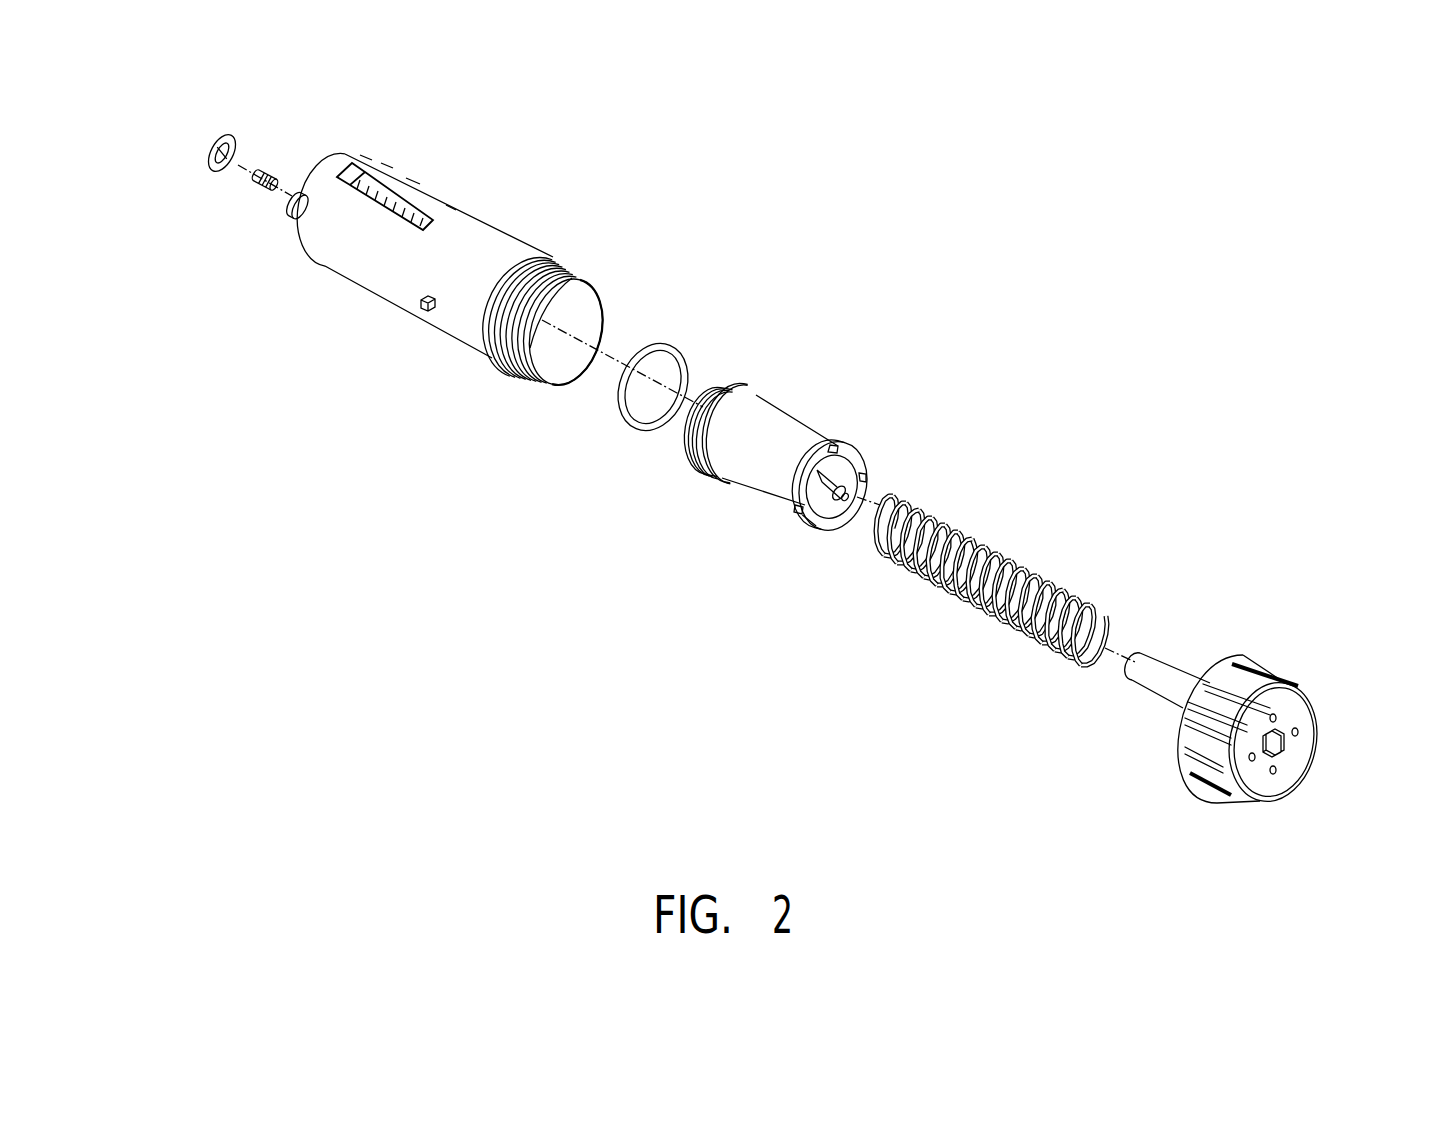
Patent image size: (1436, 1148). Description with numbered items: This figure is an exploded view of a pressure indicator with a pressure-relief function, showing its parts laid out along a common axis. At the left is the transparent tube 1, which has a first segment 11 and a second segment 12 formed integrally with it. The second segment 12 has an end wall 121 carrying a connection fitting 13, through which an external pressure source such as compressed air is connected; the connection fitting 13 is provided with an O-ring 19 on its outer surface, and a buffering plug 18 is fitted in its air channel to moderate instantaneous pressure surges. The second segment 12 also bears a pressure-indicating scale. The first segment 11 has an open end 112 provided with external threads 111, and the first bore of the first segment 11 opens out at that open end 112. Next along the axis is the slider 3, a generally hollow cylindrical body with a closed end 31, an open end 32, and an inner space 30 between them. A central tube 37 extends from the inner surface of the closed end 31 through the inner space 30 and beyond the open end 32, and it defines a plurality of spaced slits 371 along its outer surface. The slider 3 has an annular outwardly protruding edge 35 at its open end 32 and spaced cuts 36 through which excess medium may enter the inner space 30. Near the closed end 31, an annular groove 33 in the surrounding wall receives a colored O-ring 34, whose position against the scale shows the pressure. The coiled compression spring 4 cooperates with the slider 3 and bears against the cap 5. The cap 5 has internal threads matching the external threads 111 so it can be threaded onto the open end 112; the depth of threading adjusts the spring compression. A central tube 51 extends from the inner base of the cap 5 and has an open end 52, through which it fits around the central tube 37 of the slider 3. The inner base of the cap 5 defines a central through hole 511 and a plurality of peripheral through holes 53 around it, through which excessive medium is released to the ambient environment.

The transparent tube 1 is at (488, 237).
The first segment 11 is at (528, 257).
The external threads 111 is at (502, 360).
The open end 112 is at (552, 373).
The second segment 12 is at (317, 193).
The end wall 121 is at (343, 153).
The connection fitting 13 is at (288, 207).
The buffering plug 18 is at (256, 188).
The O-ring 19 is at (207, 165).
The slider 3 is at (793, 428).
The inner space 30 is at (831, 486).
The closed end 31 is at (713, 387).
The open end 32 is at (862, 458).
The annular groove 33 is at (747, 392).
The colored O-ring 34 is at (672, 348).
The annular outwardly protruding edge 35 is at (809, 520).
The spaced cuts 36 is at (830, 479).
The central tube 37 is at (833, 486).
The spaced slits 371 is at (845, 497).
The coiled compression spring 4 is at (1007, 623).
The cap 5 is at (1207, 747).
The central tube 51 is at (1162, 685).
The central through hole 511 is at (1290, 745).
The open end 52 is at (1138, 657).
The peripheral through holes 53 is at (1299, 732).